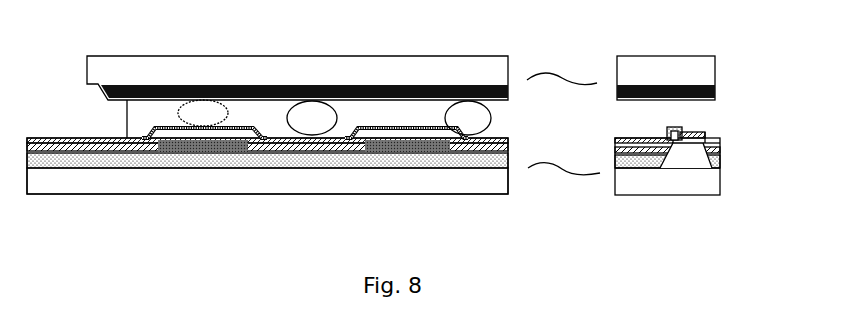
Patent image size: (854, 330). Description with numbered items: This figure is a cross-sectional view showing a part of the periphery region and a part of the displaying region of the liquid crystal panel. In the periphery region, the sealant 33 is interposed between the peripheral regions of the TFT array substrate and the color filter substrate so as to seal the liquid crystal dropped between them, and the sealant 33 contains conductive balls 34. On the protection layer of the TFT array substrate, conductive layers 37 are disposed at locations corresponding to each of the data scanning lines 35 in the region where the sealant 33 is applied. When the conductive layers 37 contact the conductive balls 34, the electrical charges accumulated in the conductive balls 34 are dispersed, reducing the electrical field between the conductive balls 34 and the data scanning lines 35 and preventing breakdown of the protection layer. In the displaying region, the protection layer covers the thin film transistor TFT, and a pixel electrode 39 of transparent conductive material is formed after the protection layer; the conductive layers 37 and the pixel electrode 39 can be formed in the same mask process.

The sealant 33 is at (340, 131).
The conductive balls 34 is at (305, 127).
The data scanning lines 35 is at (457, 148).
The conductive layers 37 is at (256, 133).
The pixel electrode 39 is at (637, 139).
The thin film transistor TFT is at (692, 158).